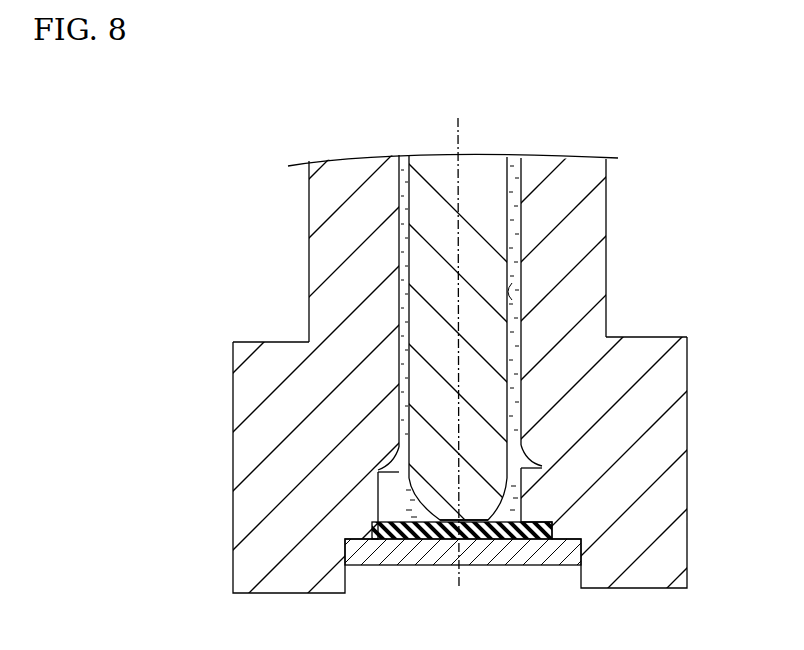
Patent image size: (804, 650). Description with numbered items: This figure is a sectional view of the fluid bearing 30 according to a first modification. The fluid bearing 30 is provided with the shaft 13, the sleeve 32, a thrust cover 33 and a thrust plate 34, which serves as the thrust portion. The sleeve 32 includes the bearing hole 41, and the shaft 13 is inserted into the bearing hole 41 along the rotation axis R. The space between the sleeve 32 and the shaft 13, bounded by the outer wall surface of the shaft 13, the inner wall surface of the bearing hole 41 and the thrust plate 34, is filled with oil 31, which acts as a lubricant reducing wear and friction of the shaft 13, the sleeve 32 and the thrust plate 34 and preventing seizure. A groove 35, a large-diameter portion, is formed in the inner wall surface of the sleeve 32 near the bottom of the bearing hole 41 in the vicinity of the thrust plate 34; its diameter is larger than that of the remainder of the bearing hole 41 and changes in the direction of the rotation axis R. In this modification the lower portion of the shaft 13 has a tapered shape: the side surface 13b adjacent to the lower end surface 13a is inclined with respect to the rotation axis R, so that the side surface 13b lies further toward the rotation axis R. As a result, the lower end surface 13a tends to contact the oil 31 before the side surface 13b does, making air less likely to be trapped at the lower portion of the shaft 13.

The fluid bearing 30 is at (628, 162).
The shaft 13 is at (521, 223).
The bearing hole 41 is at (512, 290).
The groove 35 is at (542, 466).
The side surface 13b is at (521, 500).
The lower end surface 13a is at (455, 520).
The oil 31 is at (399, 500).
The sleeve 32 is at (657, 576).
The thrust cover 33 is at (477, 540).
The thrust plate 34 is at (425, 545).
The rotation axis R is at (458, 120).